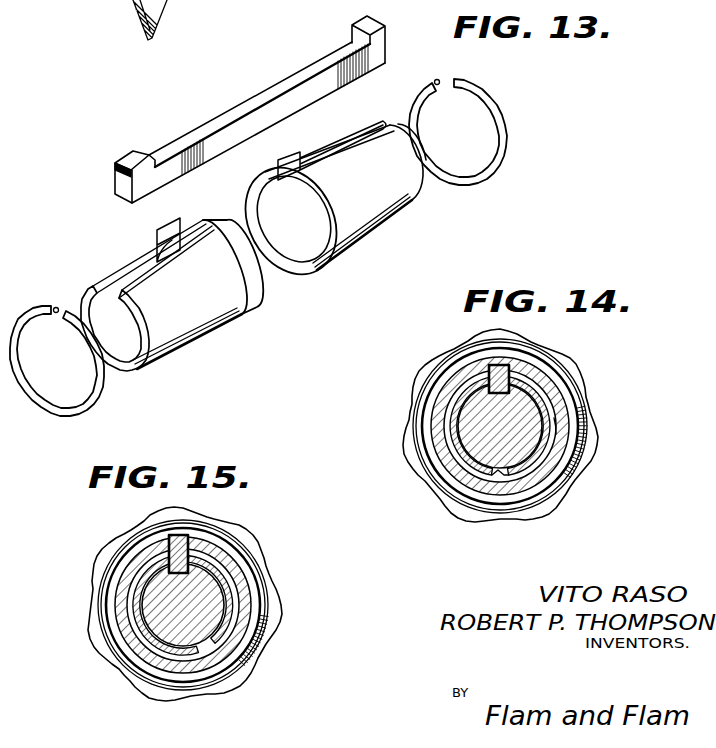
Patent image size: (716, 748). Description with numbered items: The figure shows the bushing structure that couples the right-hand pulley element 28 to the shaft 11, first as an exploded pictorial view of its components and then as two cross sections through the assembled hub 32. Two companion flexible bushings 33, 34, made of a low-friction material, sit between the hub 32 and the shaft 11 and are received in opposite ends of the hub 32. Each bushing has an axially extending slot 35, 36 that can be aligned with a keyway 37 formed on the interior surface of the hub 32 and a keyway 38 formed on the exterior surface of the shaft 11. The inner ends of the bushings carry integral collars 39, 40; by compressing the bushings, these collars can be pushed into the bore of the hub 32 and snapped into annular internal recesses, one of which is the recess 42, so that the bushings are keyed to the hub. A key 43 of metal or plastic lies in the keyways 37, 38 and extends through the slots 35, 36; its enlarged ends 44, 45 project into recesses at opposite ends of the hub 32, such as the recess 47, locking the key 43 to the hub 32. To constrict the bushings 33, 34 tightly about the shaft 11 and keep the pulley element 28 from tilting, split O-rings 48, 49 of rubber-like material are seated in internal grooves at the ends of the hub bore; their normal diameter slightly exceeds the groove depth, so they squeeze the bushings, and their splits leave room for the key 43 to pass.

In FIG. 14, the shaft 11 is at (465, 426).
In FIG. 14, the right-hand pulley element 28 is at (597, 382).
In FIG. 15, the right-hand pulley element 28 is at (115, 686).
In FIG. 14, the hub 32 is at (462, 482).
In FIG. 15, the hub 32 is at (120, 592).
In FIG. 13, the flexible bushing 33 is at (186, 342).
In FIG. 13, the flexible bushing 34 is at (398, 214).
In FIG. 14, the flexible bushing 34 is at (460, 452).
In FIG. 15, the flexible bushing 34 is at (243, 668).
In FIG. 13, the axially extending slot 35 is at (157, 242).
In FIG. 13, the axially extending slot 36 is at (360, 136).
In FIG. 14, the axially extending slot 36 is at (508, 378).
In FIG. 15, the axially extending slot 36 is at (170, 542).
In FIG. 14, the keyway 37 is at (493, 368).
In FIG. 14, the keyway 38 is at (560, 428).
In FIG. 13, the integral collar 39 is at (254, 306).
In FIG. 13, the integral collar 40 is at (342, 258).
In FIG. 14, the integral collar 40 is at (574, 479).
In FIG. 14, the annular internal recess 42 is at (497, 475).
In FIG. 13, the key 43 is at (270, 88).
In FIG. 14, the key 43 is at (489, 380).
In FIG. 15, the key 43 is at (190, 562).
In FIG. 13, the enlarged end of key 44 is at (138, 152).
In FIG. 13, the enlarged end of key 45 is at (372, 22).
In FIG. 15, the enlarged end of key 45 is at (192, 547).
In FIG. 15, the recess 47 is at (178, 535).
In FIG. 13, the split O-ring 48 is at (96, 400).
In FIG. 13, the split O-ring 49 is at (497, 160).
In FIG. 15, the split O-ring 49 is at (130, 628).